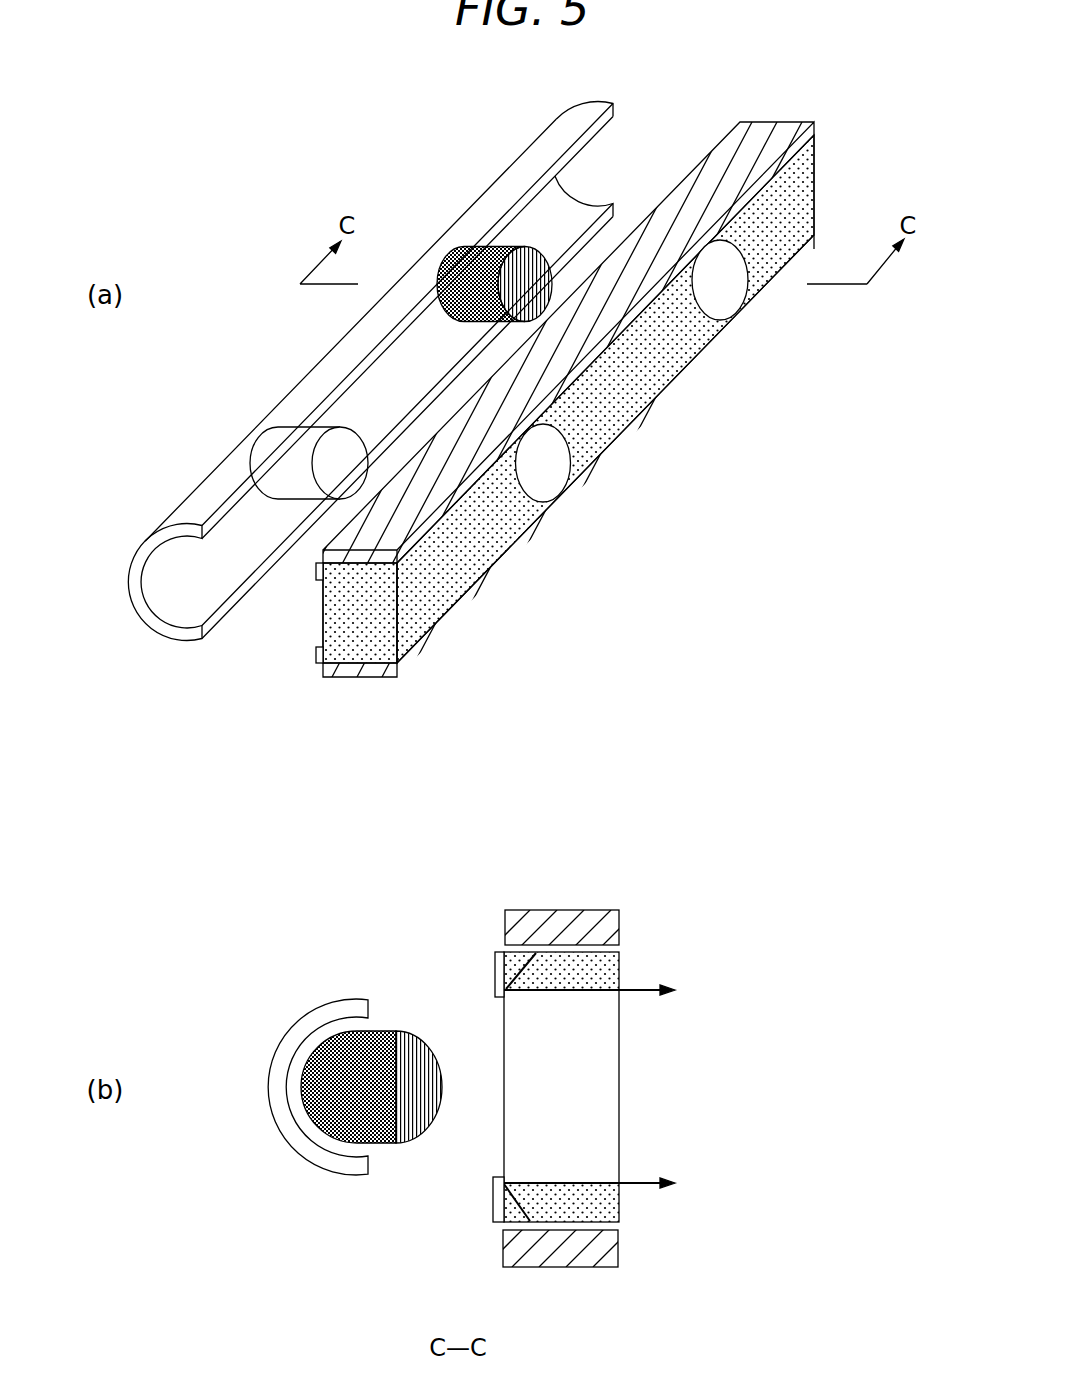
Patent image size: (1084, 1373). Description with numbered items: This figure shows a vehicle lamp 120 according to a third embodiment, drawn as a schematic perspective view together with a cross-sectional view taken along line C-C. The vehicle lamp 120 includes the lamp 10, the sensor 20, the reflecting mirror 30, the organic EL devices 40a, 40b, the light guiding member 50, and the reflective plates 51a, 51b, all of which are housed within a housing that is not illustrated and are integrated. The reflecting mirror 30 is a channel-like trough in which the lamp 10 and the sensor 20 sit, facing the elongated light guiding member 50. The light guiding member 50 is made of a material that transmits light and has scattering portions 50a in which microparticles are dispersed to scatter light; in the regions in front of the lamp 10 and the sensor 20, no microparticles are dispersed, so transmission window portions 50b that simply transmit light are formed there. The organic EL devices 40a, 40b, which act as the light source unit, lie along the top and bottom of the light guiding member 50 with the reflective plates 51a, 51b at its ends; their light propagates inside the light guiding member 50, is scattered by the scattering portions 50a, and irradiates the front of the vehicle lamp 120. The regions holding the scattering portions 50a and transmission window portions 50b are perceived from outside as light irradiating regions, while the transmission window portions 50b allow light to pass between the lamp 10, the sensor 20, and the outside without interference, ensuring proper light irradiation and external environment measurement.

The lamp 10 is at (292, 463).
The sensor 20 is at (457, 252).
The reflecting mirror 30 is at (575, 120).
The organic EL device 40a is at (817, 243).
The organic EL device 40b is at (783, 130).
The light guiding member 50 is at (805, 188).
The scattering portion 50a is at (473, 557).
The transmission window portion 50b is at (543, 467).
The reflective plate 51a is at (317, 657).
The reflective plate 51b is at (317, 572).
The vehicle lamp 120 is at (444, 774).